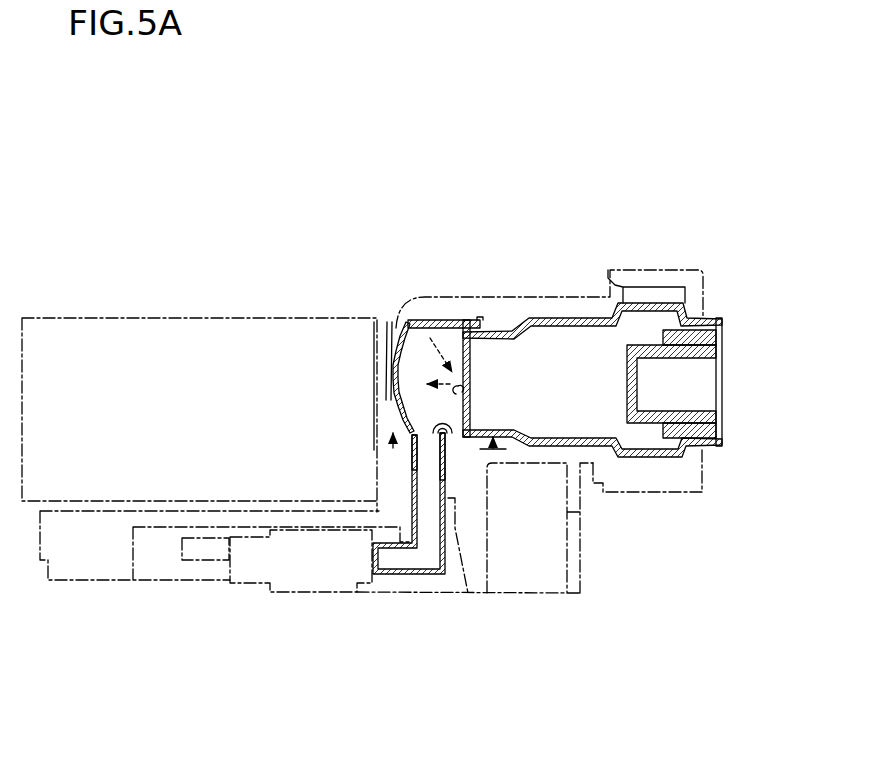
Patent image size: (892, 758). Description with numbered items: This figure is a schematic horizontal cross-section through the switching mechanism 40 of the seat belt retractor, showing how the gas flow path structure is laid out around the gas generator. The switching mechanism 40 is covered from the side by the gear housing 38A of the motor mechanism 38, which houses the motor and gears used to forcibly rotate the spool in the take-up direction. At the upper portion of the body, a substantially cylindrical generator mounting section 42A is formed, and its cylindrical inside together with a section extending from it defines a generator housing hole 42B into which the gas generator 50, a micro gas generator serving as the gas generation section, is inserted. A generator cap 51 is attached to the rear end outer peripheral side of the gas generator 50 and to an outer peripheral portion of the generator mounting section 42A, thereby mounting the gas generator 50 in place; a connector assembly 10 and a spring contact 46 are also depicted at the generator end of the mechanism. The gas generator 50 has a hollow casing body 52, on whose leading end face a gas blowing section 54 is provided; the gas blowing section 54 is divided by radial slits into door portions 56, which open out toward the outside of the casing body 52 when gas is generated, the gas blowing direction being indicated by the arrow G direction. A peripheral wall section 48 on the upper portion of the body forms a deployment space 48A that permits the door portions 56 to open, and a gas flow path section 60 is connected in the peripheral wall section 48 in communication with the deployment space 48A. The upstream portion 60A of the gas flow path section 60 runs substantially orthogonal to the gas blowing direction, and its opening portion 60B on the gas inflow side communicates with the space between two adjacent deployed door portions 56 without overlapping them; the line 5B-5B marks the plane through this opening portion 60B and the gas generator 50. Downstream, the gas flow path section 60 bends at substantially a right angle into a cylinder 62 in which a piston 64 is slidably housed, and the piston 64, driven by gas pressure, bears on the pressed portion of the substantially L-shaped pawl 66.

The switching mechanism 40 is at (549, 251).
The connector assembly 10 is at (492, 104).
The gear housing 38A is at (217, 400).
The motor mechanism 38 is at (210, 317).
The generator mounting section 42A is at (637, 270).
The generator housing hole 42B is at (547, 312).
The generator cap 51 is at (683, 270).
The gas generator 50 is at (590, 313).
The casing body 52 is at (526, 333).
The peripheral wall section 48 is at (386, 344).
The deployment space 48A is at (352, 377).
The spring contact 46 is at (398, 393).
The gas blowing section 54 is at (415, 363).
The door portions 56 is at (430, 338).
The arrow G direction G is at (458, 386).
The gas flow path section 60 is at (420, 499).
The upstream portion 60A is at (412, 460).
The opening portion 60B is at (460, 433).
The line 5B- 5B is at (393, 448).
The cylinder 62 is at (396, 595).
The piston 64 is at (313, 592).
The pawl 66 is at (208, 566).